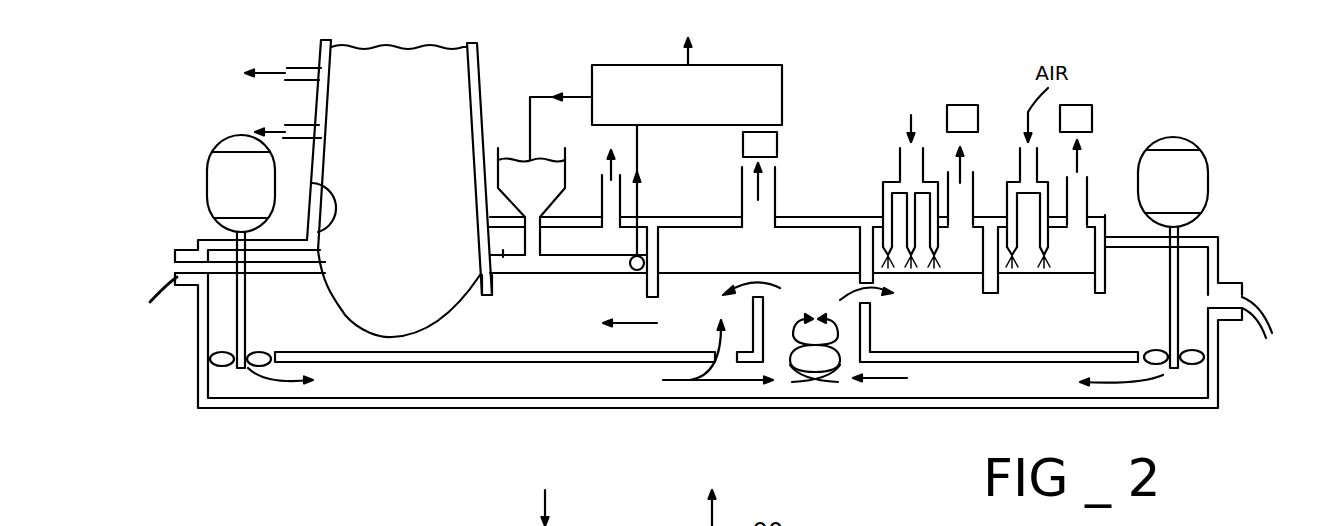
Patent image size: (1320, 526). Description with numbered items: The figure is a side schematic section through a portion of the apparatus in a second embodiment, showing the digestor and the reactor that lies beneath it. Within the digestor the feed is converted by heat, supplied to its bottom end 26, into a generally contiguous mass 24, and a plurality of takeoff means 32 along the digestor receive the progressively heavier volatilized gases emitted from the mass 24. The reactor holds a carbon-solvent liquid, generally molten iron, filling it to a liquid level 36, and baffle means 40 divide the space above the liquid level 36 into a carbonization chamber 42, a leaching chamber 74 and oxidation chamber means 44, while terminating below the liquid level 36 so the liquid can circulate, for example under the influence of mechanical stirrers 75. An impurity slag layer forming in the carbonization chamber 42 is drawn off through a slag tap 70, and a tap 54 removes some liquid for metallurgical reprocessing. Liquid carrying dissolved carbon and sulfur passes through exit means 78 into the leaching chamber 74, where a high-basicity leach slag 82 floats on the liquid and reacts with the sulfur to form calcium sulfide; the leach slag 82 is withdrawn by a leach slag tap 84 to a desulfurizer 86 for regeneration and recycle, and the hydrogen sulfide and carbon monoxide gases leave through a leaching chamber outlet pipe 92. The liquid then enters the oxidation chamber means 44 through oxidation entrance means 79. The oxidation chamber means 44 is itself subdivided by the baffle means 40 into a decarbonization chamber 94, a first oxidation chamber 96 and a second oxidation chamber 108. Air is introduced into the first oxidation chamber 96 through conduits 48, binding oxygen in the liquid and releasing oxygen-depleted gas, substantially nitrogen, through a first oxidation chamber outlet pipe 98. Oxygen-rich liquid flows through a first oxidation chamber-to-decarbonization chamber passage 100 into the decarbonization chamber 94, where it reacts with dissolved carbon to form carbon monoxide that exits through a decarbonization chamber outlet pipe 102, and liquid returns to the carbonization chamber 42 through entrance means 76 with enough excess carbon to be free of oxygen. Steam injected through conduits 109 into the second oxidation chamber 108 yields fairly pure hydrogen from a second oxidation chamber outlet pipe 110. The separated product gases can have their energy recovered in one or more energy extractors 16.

The energy extractor 16 is at (917, 131).
The contiguous mass 24 is at (372, 151).
The bottom end of the digestor 26 is at (313, 186).
The takeoff means 32 is at (285, 125).
The liquid level 36 is at (787, 273).
The baffle means 40 is at (477, 294).
The carbonization chamber 42 is at (259, 316).
The oxidation chamber means 44 is at (843, 240).
The conduits 48 is at (1017, 240).
The tap 54 is at (1230, 283).
The slag tap 70 is at (173, 262).
The leaching chamber 74 is at (560, 252).
The mechanical stirrers 75 is at (243, 367).
The entrance means 76 is at (752, 298).
The exit means 78 is at (485, 297).
The oxidation entrance means 79 is at (873, 302).
The leach slag 82 is at (507, 241).
The leach slag tap 84 is at (642, 260).
The desulfurizer 86 is at (783, 88).
The leaching chamber outlet pipe 92 is at (622, 198).
The decarbonization chamber 94 is at (743, 258).
The first oxidation chamber 96 is at (1062, 256).
The first oxidation chamber outlet pipe 98 is at (1090, 178).
The first oxidation chamber-to-decarbonization chamber passage 100 is at (978, 363).
The decarbonization chamber outlet pipe 102 is at (777, 203).
The second oxidation chamber 108 is at (978, 268).
The conduits 109 is at (912, 212).
The second oxidation chamber outlet pipe 110 is at (973, 172).